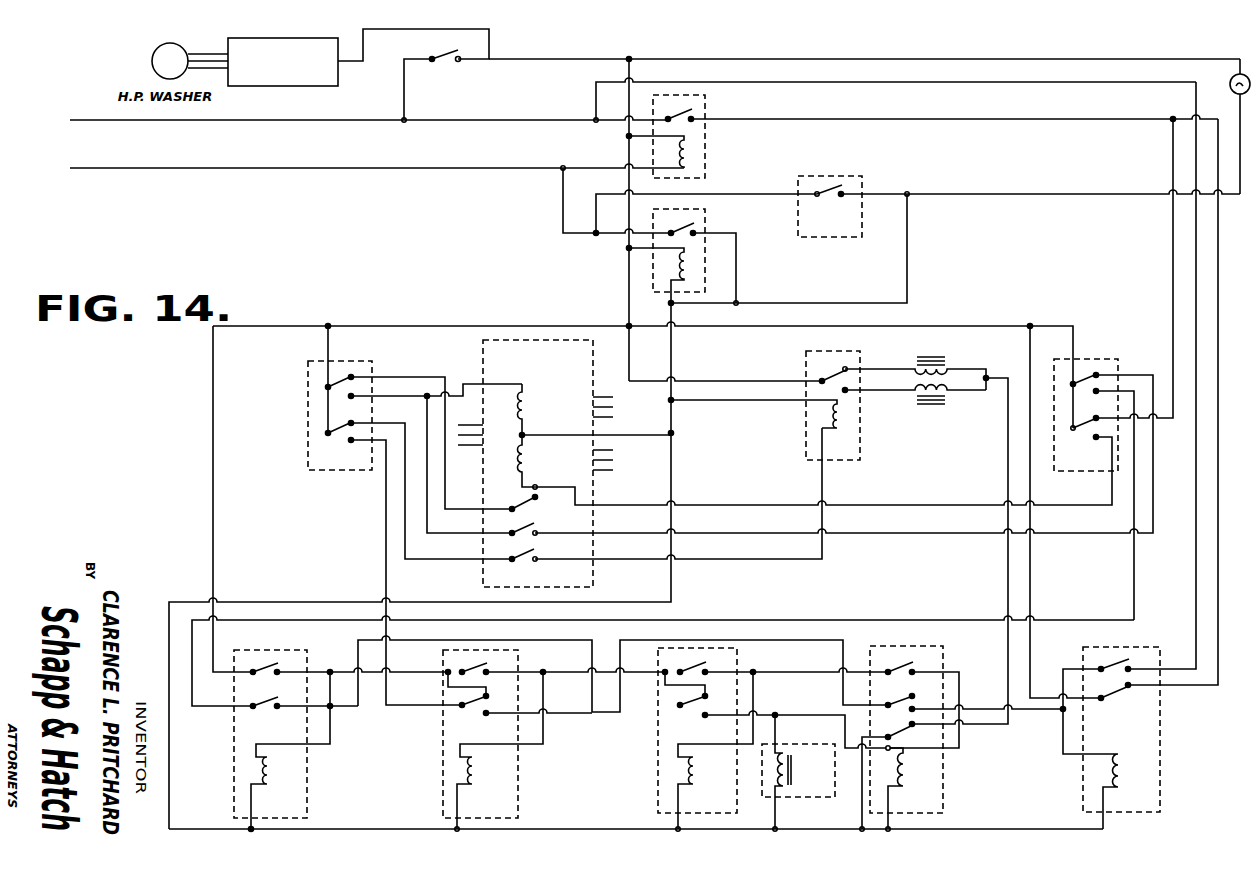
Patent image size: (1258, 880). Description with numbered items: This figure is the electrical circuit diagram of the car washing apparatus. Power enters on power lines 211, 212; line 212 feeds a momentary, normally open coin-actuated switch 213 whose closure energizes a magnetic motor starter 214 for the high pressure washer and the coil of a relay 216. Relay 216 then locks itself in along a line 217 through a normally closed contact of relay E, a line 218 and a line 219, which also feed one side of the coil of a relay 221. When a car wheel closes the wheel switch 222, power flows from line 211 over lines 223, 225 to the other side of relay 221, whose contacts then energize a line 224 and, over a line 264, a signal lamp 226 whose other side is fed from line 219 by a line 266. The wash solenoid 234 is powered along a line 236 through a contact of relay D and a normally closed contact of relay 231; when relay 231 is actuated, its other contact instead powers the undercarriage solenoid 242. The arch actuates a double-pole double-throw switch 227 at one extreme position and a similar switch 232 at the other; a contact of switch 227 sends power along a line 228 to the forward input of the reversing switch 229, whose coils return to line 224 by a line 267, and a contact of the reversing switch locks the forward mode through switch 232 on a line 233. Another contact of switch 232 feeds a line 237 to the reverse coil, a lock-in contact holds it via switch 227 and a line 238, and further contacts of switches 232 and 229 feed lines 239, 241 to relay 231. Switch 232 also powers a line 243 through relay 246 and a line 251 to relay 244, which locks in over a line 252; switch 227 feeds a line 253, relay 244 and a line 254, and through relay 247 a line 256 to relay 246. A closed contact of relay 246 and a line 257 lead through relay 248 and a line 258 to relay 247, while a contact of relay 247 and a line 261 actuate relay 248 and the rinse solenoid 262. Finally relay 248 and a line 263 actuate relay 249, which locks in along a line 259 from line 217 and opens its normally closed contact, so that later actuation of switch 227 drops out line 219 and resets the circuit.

The power line 211 is at (104, 169).
The power line 212 is at (107, 121).
The coin-actuated switch 213 is at (447, 63).
The magnetic motor starter 214 is at (297, 87).
The relay 216 is at (705, 113).
The line 217 is at (893, 119).
The line 218 is at (1032, 580).
The line 219 is at (629, 281).
The relay 221 is at (705, 222).
The wheel switch 222 is at (858, 176).
The line 223 is at (563, 221).
The line 224 is at (673, 366).
The line 225 is at (910, 262).
The signal lamp 226 is at (1230, 78).
The double-pole double-throw switch 227 is at (1093, 358).
The line 228 is at (740, 507).
The reversing switch 229 is at (483, 347).
The relay 231 is at (806, 353).
The double-pole double-throw switch 232 is at (356, 363).
The line 233 is at (398, 379).
The wash solenoid 234 is at (952, 367).
The line 236 is at (1008, 464).
The line 237 is at (393, 398).
The line 238 is at (740, 534).
The line 239 is at (390, 425).
The line 241 is at (740, 561).
The undercarriage solenoid 242 is at (954, 395).
The line 243 is at (386, 495).
The relay 244 is at (307, 797).
The relay 246 is at (518, 797).
The relay 247 is at (658, 801).
The relay 248 is at (943, 801).
The relay 249 is at (1160, 790).
The line 251 is at (348, 670).
The line 252 is at (213, 523).
The line 253 is at (1134, 587).
The line 254 is at (358, 640).
The line 256 is at (573, 668).
The line 257 is at (578, 713).
The line 258 is at (780, 670).
The line 259 is at (1196, 613).
The line 261 is at (783, 715).
The rinse solenoid 262 is at (790, 742).
The line 263 is at (984, 709).
The line 264 is at (1030, 194).
The line 266 is at (896, 59).
The line 267 is at (630, 437).